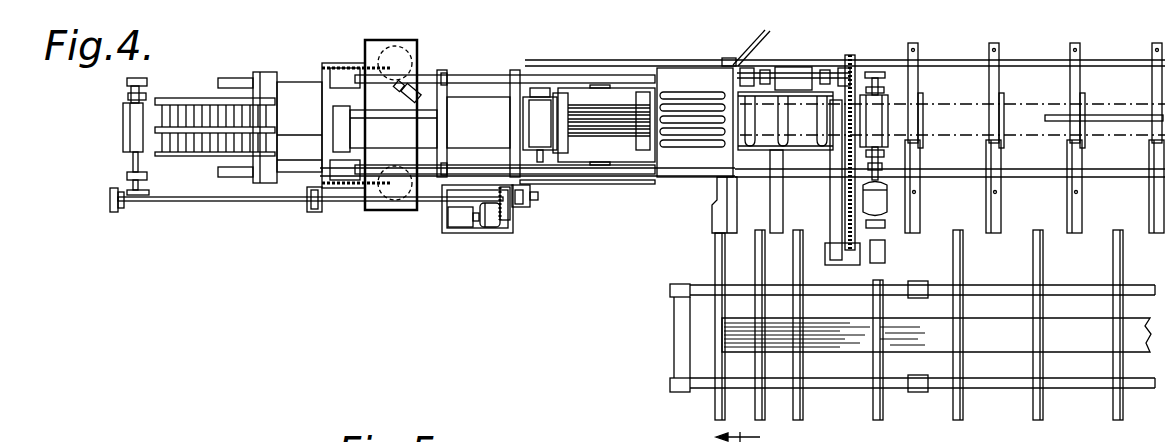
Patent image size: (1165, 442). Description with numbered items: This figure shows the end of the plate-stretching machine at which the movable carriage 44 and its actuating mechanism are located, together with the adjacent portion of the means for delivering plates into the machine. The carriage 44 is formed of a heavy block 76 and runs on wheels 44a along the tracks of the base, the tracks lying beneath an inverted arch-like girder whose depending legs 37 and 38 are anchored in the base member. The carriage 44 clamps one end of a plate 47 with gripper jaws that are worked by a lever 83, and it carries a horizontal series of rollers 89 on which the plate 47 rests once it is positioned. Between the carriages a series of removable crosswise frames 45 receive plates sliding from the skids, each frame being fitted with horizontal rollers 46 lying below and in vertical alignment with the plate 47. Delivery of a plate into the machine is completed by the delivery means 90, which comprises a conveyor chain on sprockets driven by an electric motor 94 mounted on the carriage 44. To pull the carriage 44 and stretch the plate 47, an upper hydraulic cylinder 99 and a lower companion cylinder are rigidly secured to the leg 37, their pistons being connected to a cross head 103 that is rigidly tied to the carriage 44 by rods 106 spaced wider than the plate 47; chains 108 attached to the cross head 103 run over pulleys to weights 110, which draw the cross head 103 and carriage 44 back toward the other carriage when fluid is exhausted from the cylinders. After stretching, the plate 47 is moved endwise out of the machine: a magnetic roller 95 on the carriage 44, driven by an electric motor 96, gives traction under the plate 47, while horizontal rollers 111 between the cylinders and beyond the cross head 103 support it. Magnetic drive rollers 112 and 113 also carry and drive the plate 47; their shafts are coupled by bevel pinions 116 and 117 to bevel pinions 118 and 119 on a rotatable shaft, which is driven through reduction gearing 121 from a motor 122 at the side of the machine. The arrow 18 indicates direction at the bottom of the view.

The direction arrow 18 is at (751, 432).
The leg 37 is at (470, 108).
The leg 38 is at (1113, 270).
The carriage 44 is at (700, 170).
The wheels 44a is at (655, 68).
The frames 45 is at (1000, 208).
The horizontal rollers 46 is at (1000, 118).
The plate 47 is at (1093, 302).
The heavy block 76 is at (680, 165).
The lever 83 is at (755, 48).
The rollers 89 is at (822, 108).
The delivery means 90 is at (868, 245).
The electric motor 94 is at (795, 70).
The magnetic roller 95 is at (878, 120).
The electric motor 96 is at (880, 205).
The upper hydraulic cylinder 99 is at (420, 110).
The cross head 103 is at (298, 190).
The rods 106 is at (615, 75).
The chains 108 is at (335, 70).
The weights 110 is at (400, 60).
The horizontal rollers 111 is at (210, 100).
The magnetic drive roller 112 is at (543, 110).
The magnetic drive roller 113 is at (123, 118).
The bevel pinion 116 is at (535, 205).
The bevel pinion 117 is at (148, 193).
The bevel pinion 118 is at (125, 204).
The bevel pinion 119 is at (524, 212).
The reduction gearing 121 is at (500, 235).
The motor 122 is at (460, 220).